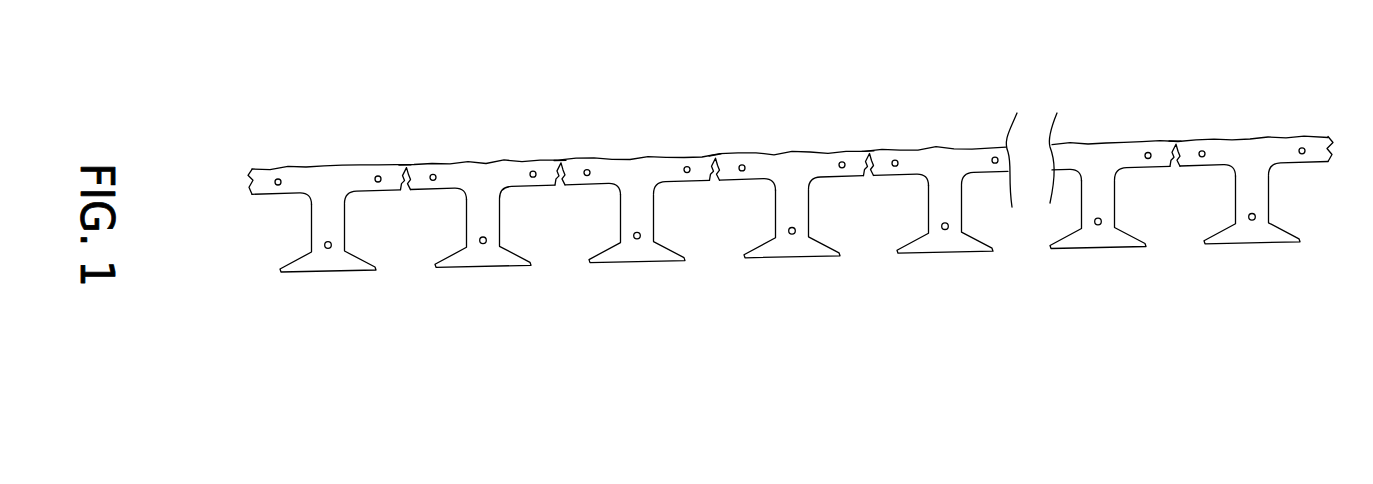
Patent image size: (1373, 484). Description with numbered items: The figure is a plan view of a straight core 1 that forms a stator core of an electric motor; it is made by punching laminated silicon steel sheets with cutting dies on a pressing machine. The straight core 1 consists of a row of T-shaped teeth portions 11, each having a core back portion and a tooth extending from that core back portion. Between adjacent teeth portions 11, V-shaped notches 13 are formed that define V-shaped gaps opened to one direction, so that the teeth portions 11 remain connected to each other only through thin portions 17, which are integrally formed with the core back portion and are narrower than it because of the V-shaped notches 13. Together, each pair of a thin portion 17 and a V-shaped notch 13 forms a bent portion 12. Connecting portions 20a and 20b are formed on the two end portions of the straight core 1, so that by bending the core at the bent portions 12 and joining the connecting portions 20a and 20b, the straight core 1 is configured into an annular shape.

The straight core 1 is at (850, 105).
The T-shaped teeth portions 11 is at (340, 233).
The bent portions 12 is at (412, 160).
The V-shaped notches 13 is at (403, 202).
The thin portions 17 is at (400, 170).
The connecting portion 20a is at (243, 182).
The connecting portion 20b is at (1344, 152).